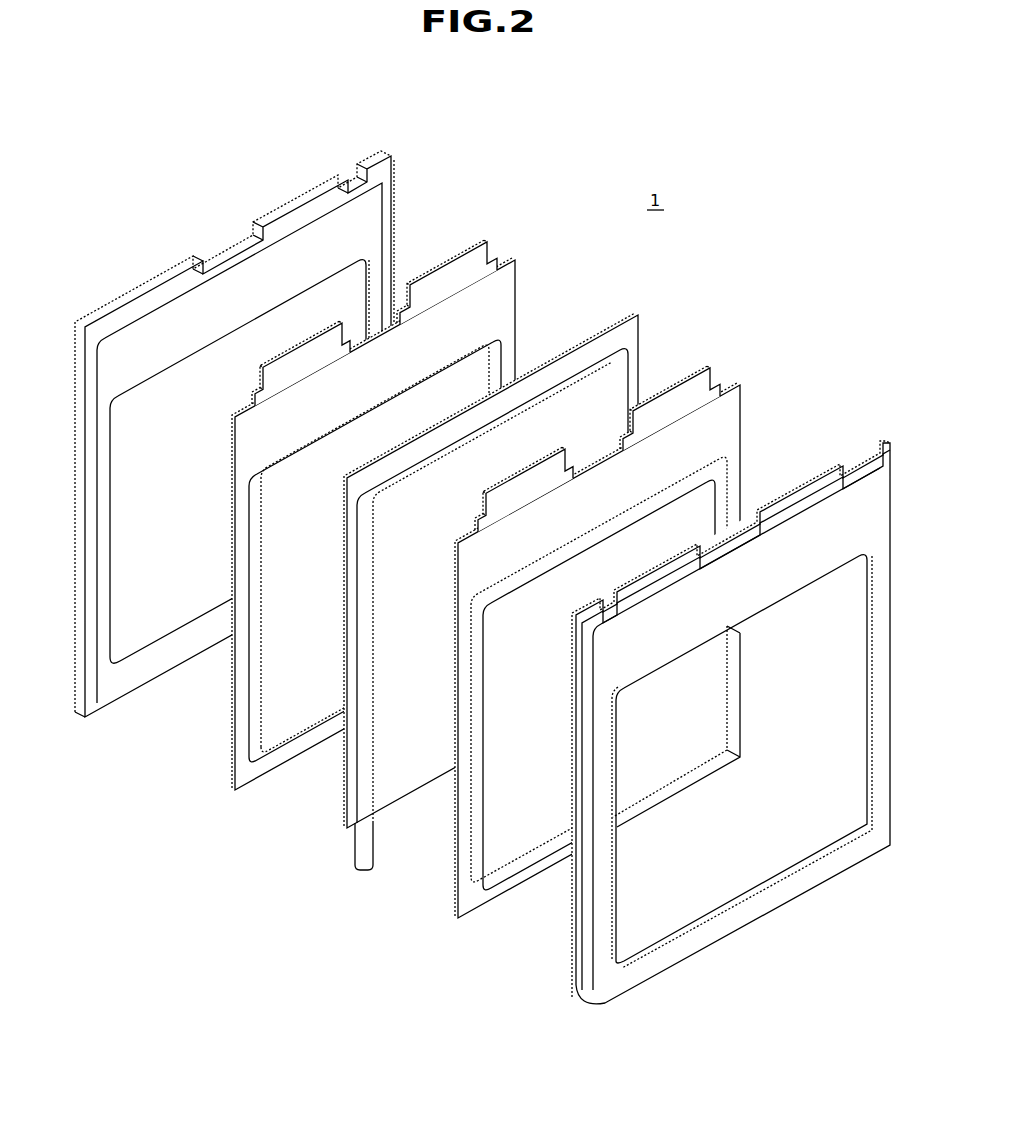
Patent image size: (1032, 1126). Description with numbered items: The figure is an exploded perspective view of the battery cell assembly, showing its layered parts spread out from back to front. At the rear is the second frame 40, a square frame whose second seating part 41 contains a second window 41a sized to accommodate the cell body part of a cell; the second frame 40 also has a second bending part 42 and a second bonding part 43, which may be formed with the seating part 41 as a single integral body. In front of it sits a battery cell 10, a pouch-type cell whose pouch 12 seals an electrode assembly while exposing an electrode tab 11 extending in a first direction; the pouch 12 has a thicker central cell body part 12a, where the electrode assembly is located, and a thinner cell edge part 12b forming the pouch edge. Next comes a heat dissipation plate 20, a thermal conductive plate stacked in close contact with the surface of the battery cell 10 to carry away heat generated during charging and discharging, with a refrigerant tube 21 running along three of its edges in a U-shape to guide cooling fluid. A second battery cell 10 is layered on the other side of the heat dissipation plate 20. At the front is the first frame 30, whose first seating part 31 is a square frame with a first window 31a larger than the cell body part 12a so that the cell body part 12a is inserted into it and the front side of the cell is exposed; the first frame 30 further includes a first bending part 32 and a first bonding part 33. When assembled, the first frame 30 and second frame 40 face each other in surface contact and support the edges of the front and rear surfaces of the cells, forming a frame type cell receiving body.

The battery cell 10 is at (500, 577).
The electrode tab 11 is at (465, 257).
The pouch 12 is at (506, 292).
The cell body part 12a is at (720, 497).
The cell edge part 12b is at (731, 412).
The heat dissipation plate 20 is at (491, 618).
The refrigerant tube 21 is at (362, 862).
The first frame 30 is at (740, 727).
The seating part 31 is at (640, 977).
The window 31a is at (738, 854).
The bending part 32 is at (582, 988).
The bonding part 33 is at (574, 984).
The second frame 40 is at (207, 422).
The seating part 41 is at (115, 668).
The window 41a is at (160, 412).
The bending part 42 is at (73, 564).
The bonding part 43 is at (103, 706).